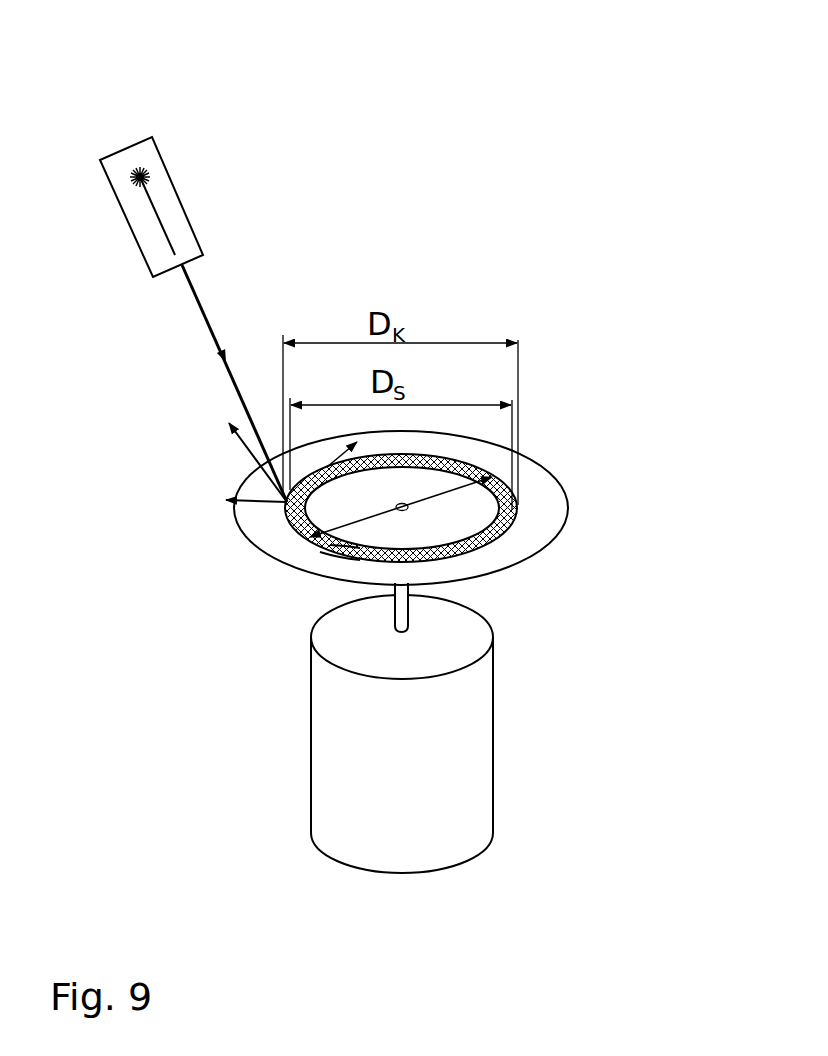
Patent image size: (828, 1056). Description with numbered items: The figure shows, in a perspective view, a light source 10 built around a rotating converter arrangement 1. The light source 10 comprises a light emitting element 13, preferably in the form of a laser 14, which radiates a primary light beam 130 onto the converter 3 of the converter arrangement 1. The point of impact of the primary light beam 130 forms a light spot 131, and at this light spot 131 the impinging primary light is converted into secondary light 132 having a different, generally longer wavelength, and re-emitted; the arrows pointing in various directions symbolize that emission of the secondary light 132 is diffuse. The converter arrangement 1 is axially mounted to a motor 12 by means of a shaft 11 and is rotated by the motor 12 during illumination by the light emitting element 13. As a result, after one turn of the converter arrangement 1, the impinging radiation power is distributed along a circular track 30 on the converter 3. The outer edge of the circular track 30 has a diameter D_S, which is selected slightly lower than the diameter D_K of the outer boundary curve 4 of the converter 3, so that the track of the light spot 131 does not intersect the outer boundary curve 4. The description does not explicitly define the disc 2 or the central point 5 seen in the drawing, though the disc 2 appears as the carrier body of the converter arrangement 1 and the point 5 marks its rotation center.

The converter arrangement 1 is at (534, 431).
The carrier disc 2 is at (253, 479).
The converter 3 is at (507, 533).
The outer boundary curve 4 is at (333, 554).
The center / diameter direction 5 is at (444, 493).
The light source 10 is at (99, 587).
The shaft 11 is at (410, 598).
The motor 12 is at (493, 698).
The light emitting element 13 is at (135, 175).
The laser 14 is at (132, 232).
The circular track 30 is at (336, 545).
The primary light beam 130 is at (205, 315).
The light spot 131 is at (283, 517).
The secondary light 132 is at (247, 443).